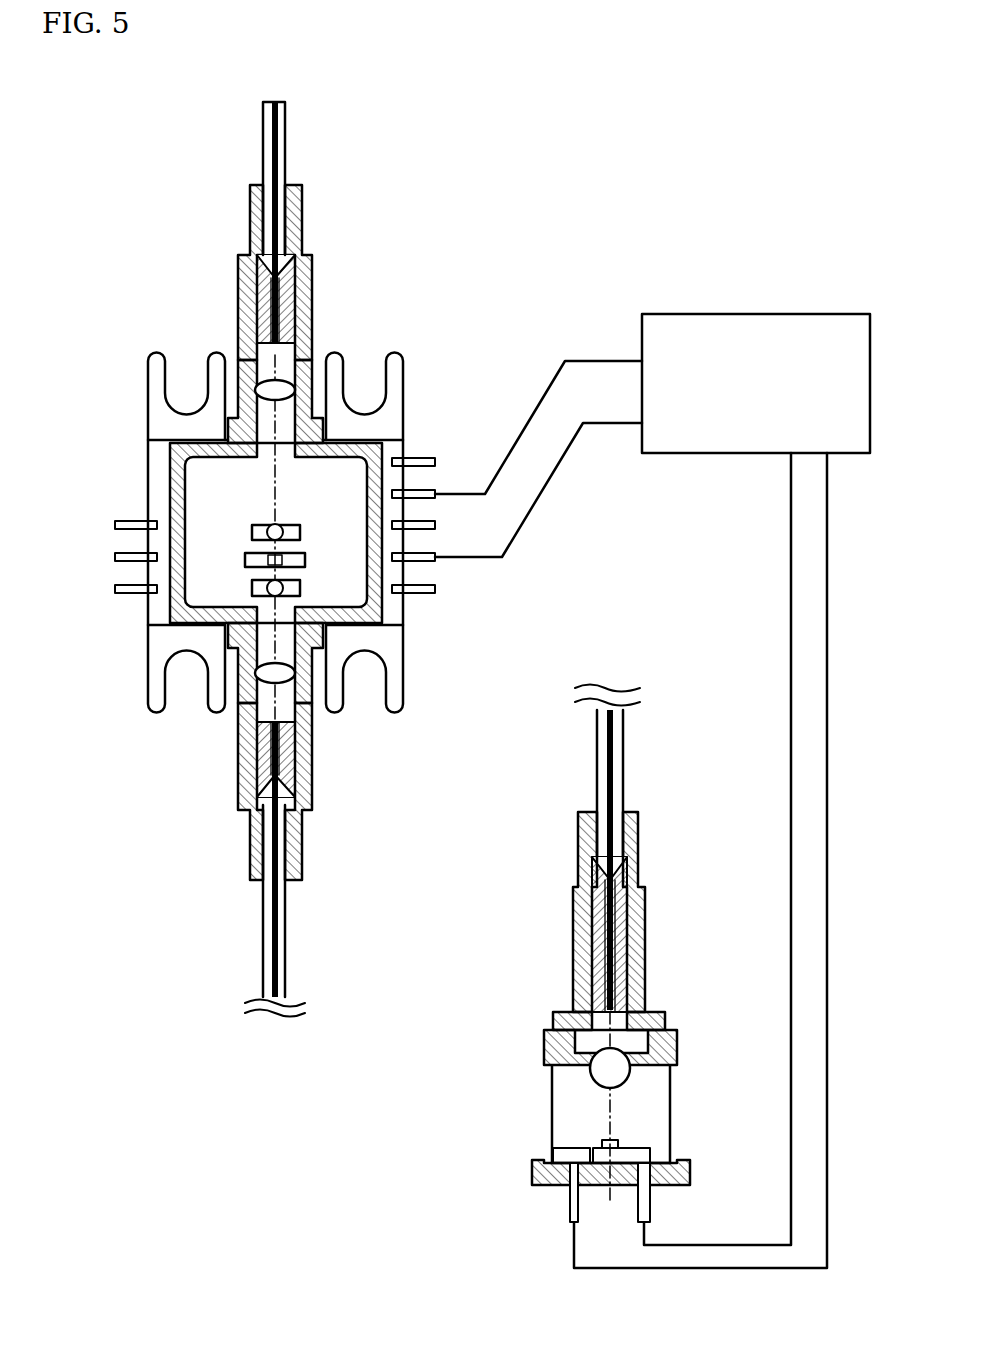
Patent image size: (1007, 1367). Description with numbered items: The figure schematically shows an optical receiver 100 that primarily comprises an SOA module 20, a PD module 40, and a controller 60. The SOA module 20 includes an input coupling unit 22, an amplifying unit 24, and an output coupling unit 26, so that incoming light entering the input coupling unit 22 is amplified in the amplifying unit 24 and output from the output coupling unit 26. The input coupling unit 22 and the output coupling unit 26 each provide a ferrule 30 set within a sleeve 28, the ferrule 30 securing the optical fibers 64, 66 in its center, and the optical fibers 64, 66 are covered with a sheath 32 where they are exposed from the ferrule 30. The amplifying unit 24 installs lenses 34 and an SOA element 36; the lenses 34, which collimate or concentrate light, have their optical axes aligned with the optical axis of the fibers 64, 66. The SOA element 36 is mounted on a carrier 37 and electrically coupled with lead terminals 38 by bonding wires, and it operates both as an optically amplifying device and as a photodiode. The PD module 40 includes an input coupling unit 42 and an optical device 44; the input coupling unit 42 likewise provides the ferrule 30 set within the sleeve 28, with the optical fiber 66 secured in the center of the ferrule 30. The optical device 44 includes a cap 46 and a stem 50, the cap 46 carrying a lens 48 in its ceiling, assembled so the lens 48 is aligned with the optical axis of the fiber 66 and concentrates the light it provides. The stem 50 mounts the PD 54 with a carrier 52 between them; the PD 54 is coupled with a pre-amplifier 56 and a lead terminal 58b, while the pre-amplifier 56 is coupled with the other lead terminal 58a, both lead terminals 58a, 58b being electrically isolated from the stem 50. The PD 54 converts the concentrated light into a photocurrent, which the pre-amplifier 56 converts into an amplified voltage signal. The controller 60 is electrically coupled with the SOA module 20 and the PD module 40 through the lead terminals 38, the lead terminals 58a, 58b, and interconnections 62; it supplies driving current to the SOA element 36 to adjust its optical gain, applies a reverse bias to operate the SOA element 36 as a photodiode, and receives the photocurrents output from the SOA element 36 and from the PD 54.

The optical receiver 100 is at (616, 182).
The SOA module 20 is at (466, 319).
The input coupling unit 22 is at (198, 234).
The amplifying unit 24 is at (107, 449).
The output coupling unit 26 is at (211, 835).
The sleeve 28 is at (312, 269).
The ferrule 30 is at (290, 306).
The sheath 32 is at (285, 139).
The lenses 34 is at (260, 390).
The SOA element 36 is at (248, 552).
The carrier 37 is at (182, 575).
The lead terminals 38 is at (428, 595).
The PD module 40 is at (677, 838).
The input coupling unit 42 is at (510, 865).
The optical device 44 is at (487, 1027).
The cap 46 is at (665, 1030).
The lens 48 is at (678, 1062).
The stem 50 is at (532, 1172).
The carrier 52 is at (650, 1150).
The PD 54 is at (618, 1145).
The pre-amplifier 56 is at (553, 1150).
The lead terminal 58a is at (568, 1200).
The lead terminal 58b is at (650, 1200).
The controller 60 is at (762, 313).
The interconnections 62 is at (584, 358).
The optical fiber 64 is at (285, 290).
The optical fiber 66 is at (273, 912).